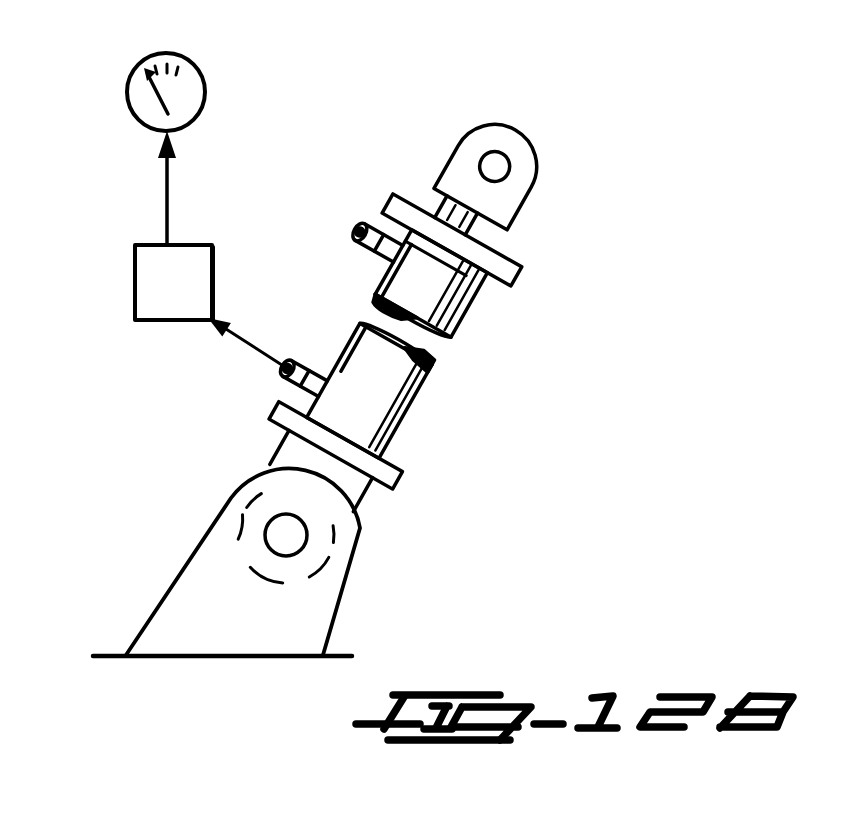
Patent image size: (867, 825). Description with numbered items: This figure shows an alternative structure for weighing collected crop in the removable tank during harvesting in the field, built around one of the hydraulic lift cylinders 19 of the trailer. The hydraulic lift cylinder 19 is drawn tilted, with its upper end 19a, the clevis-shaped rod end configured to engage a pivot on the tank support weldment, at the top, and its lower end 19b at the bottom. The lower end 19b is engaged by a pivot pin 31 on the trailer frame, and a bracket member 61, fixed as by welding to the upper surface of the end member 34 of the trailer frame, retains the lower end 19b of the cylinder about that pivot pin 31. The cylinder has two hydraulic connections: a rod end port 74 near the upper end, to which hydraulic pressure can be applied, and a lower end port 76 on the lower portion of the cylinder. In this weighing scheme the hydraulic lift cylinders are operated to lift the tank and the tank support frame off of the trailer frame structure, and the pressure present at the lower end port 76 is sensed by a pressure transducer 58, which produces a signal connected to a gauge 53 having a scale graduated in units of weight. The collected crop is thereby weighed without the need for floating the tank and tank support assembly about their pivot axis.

The hydraulic lift cylinder 19 is at (428, 395).
The upper end 19a is at (537, 166).
The lower end 19b is at (275, 452).
The pivot pin 31 is at (268, 525).
The end member 34 is at (108, 654).
The gauge 53 is at (128, 100).
The pressure transducer 58 is at (135, 297).
The bracket member 61 is at (340, 606).
The rod end port 74 is at (366, 226).
The lower end port 76 is at (301, 363).